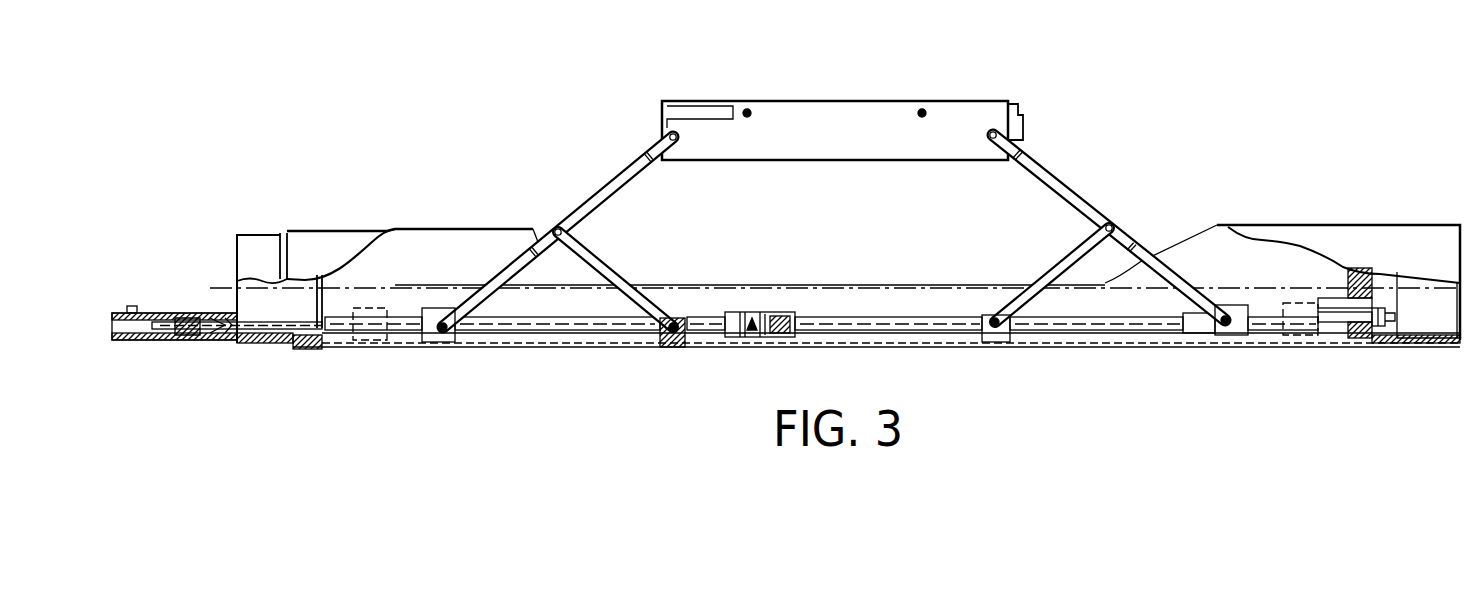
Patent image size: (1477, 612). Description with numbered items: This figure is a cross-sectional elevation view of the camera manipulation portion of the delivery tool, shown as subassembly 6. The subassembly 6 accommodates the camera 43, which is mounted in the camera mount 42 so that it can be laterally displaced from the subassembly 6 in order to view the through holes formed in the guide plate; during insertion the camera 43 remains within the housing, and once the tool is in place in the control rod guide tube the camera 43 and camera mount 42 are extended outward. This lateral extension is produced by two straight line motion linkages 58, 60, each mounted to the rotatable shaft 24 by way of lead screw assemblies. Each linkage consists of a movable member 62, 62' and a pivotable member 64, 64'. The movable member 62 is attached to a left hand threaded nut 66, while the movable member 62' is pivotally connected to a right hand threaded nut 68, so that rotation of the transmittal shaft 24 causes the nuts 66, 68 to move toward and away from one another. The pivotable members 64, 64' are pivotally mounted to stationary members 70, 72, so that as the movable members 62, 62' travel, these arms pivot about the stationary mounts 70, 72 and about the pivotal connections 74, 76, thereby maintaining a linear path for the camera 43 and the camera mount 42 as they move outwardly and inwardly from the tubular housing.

The subassembly 6 is at (468, 208).
The rotatable shaft 24 is at (560, 333).
The camera mount 42 is at (940, 100).
The camera 43 is at (1023, 110).
The straight line motion linkage 58 is at (618, 170).
The straight line motion linkage 60 is at (1098, 207).
The movable member 62 is at (558, 232).
The movable member 62' is at (1103, 227).
The pivotable member 64 is at (615, 279).
The pivotable member 64' is at (1027, 275).
The left hand threaded nut 66 is at (432, 345).
The right hand threaded nut 68 is at (1228, 340).
The stationary member 70 is at (672, 348).
The stationary member 72 is at (997, 345).
The pivotal connection 74 is at (556, 228).
The pivotal connection 76 is at (1113, 222).